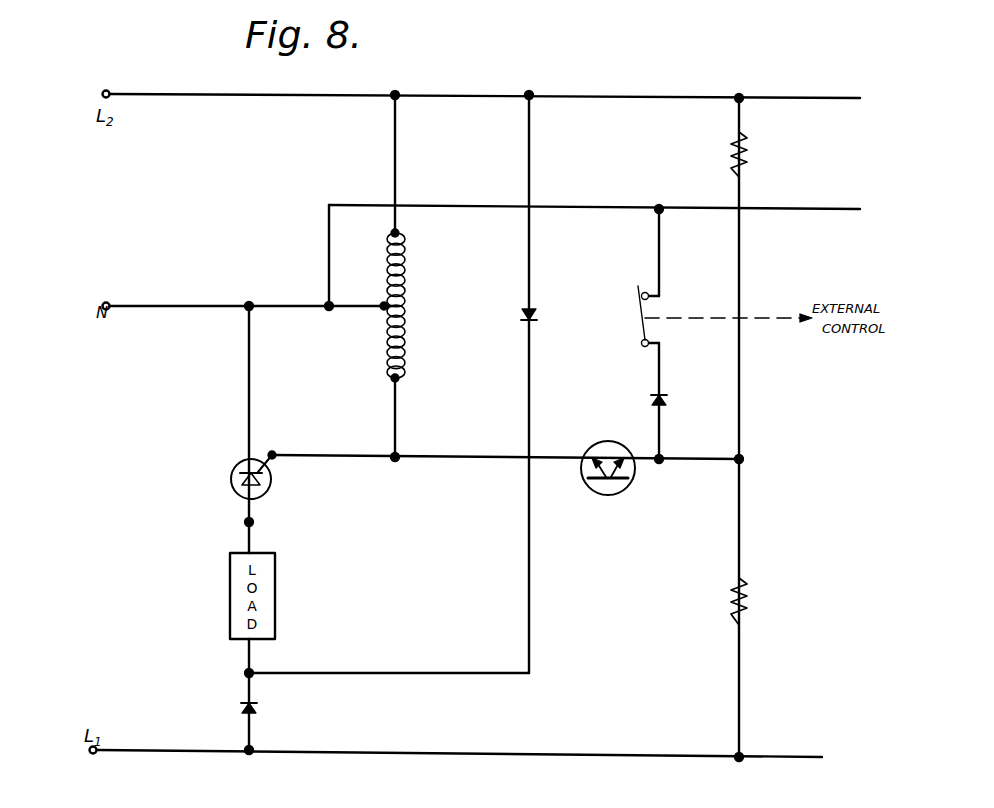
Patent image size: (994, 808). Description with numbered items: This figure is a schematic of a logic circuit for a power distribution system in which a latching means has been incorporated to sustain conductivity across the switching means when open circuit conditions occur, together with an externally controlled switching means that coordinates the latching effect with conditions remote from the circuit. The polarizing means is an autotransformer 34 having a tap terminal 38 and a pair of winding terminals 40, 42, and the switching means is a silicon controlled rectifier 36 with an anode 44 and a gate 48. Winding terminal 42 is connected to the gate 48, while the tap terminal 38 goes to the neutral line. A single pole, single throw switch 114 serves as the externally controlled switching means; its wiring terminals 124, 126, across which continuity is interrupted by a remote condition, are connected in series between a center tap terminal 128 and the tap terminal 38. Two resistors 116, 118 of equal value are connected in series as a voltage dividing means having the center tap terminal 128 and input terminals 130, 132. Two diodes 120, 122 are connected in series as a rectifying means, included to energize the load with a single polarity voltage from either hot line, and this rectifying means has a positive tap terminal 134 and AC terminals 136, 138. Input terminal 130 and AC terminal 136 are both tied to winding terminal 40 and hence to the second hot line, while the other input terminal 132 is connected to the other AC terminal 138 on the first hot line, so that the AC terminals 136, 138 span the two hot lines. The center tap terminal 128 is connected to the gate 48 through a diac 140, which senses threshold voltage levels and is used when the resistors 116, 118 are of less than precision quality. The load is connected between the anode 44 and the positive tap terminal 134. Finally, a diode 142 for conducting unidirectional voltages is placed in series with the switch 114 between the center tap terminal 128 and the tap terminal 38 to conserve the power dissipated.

The autotransformer 34 is at (405, 336).
The silicon controlled rectifier 36 is at (268, 492).
The tap terminal 38 is at (383, 310).
The winding terminal 40 is at (398, 94).
The winding terminal 42 is at (395, 460).
The anode 44 is at (247, 522).
The gate 48 is at (272, 455).
The single pole, single throw switch 114 is at (628, 302).
The resistor 116 is at (746, 603).
The resistor 118 is at (746, 150).
The diode 120 is at (527, 313).
The diode 122 is at (245, 706).
The wiring terminal 124 is at (648, 288).
The wiring terminal 126 is at (643, 347).
The center tap terminal 128 is at (742, 460).
The input terminal 130 is at (740, 96).
The input terminal 132 is at (740, 758).
The positive tap terminal 134 is at (246, 673).
The AC terminal 136 is at (531, 94).
The AC terminal 138 is at (251, 752).
The diac 140 is at (612, 497).
The diode 142 is at (662, 396).